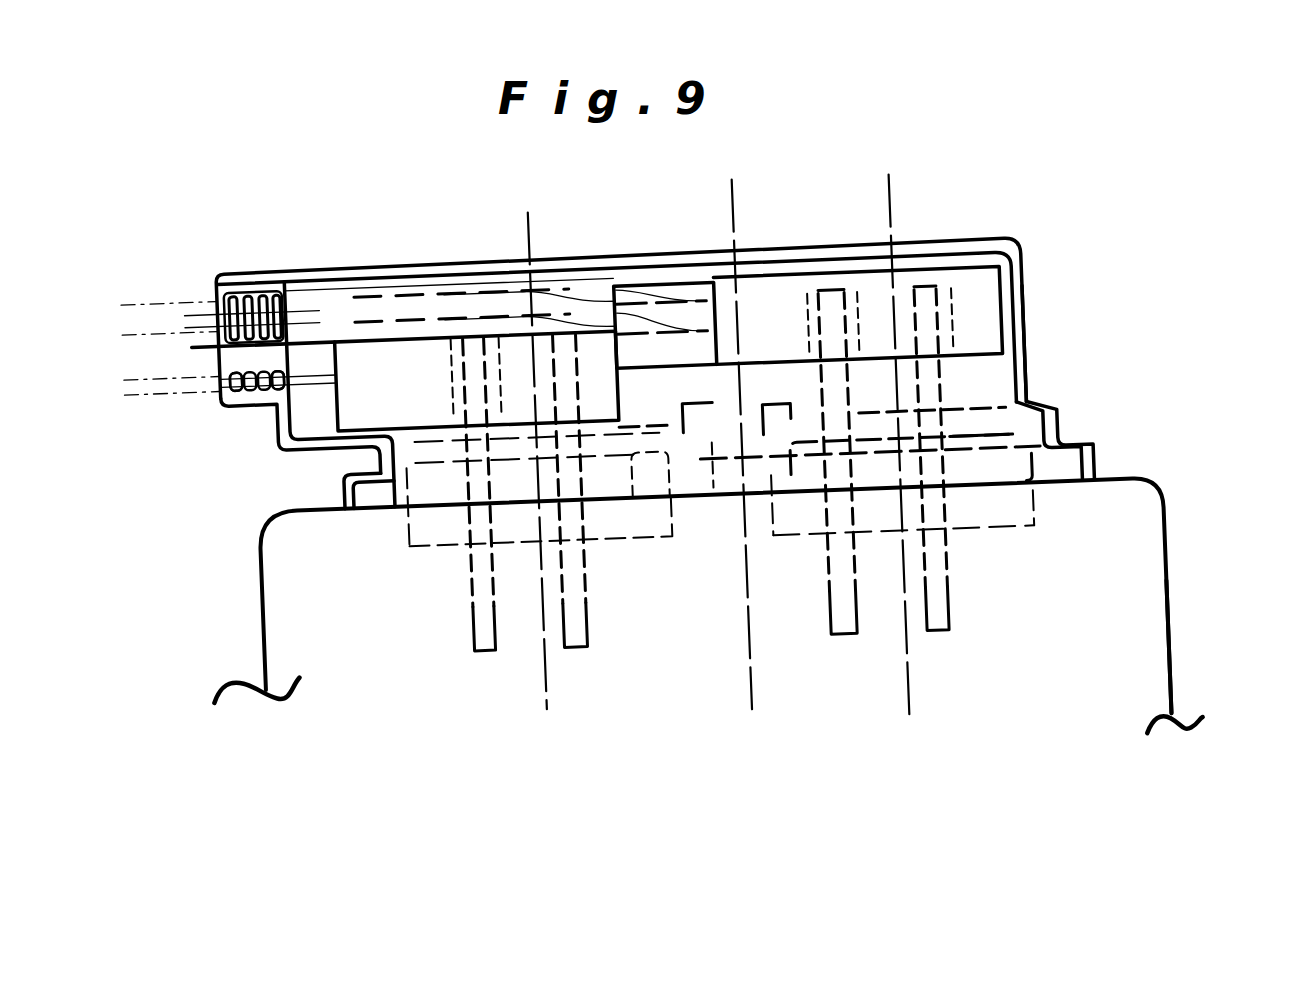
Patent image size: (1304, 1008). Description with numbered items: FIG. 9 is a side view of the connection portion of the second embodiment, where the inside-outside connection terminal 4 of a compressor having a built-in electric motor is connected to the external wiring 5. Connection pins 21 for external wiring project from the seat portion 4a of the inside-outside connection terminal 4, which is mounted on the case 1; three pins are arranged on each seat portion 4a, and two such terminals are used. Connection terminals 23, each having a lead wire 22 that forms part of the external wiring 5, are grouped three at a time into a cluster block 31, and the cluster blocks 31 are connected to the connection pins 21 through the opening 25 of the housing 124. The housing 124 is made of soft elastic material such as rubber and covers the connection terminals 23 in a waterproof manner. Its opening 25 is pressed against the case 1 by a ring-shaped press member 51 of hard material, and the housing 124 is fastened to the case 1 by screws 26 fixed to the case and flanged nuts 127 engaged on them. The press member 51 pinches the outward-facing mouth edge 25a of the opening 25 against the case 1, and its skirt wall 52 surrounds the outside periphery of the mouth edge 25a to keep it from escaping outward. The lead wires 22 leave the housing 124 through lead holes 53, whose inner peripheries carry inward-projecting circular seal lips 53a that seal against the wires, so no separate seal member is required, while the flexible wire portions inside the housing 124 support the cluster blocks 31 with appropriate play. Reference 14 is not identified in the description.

The case 1 is at (1140, 657).
The inside-outside connection terminal 4 is at (426, 563).
The seat portion 4a is at (407, 533).
The external wiring 5 is at (145, 296).
The housing 14 is at (1180, 591).
The connection pin for external wiring 21 is at (453, 353).
The lead wire 22 is at (178, 372).
The connection terminal 23 is at (452, 387).
The opening 25 is at (1027, 483).
The mouth edge 25a is at (1070, 465).
The screw 26 is at (772, 378).
The cluster block 31 is at (940, 248).
The press member 51 is at (1098, 440).
The skirt wall 52 is at (343, 496).
The lead hole 53 is at (303, 360).
The circular seal lip 53a is at (240, 372).
The housing 124 is at (1028, 362).
The flanged nut 127 is at (684, 370).